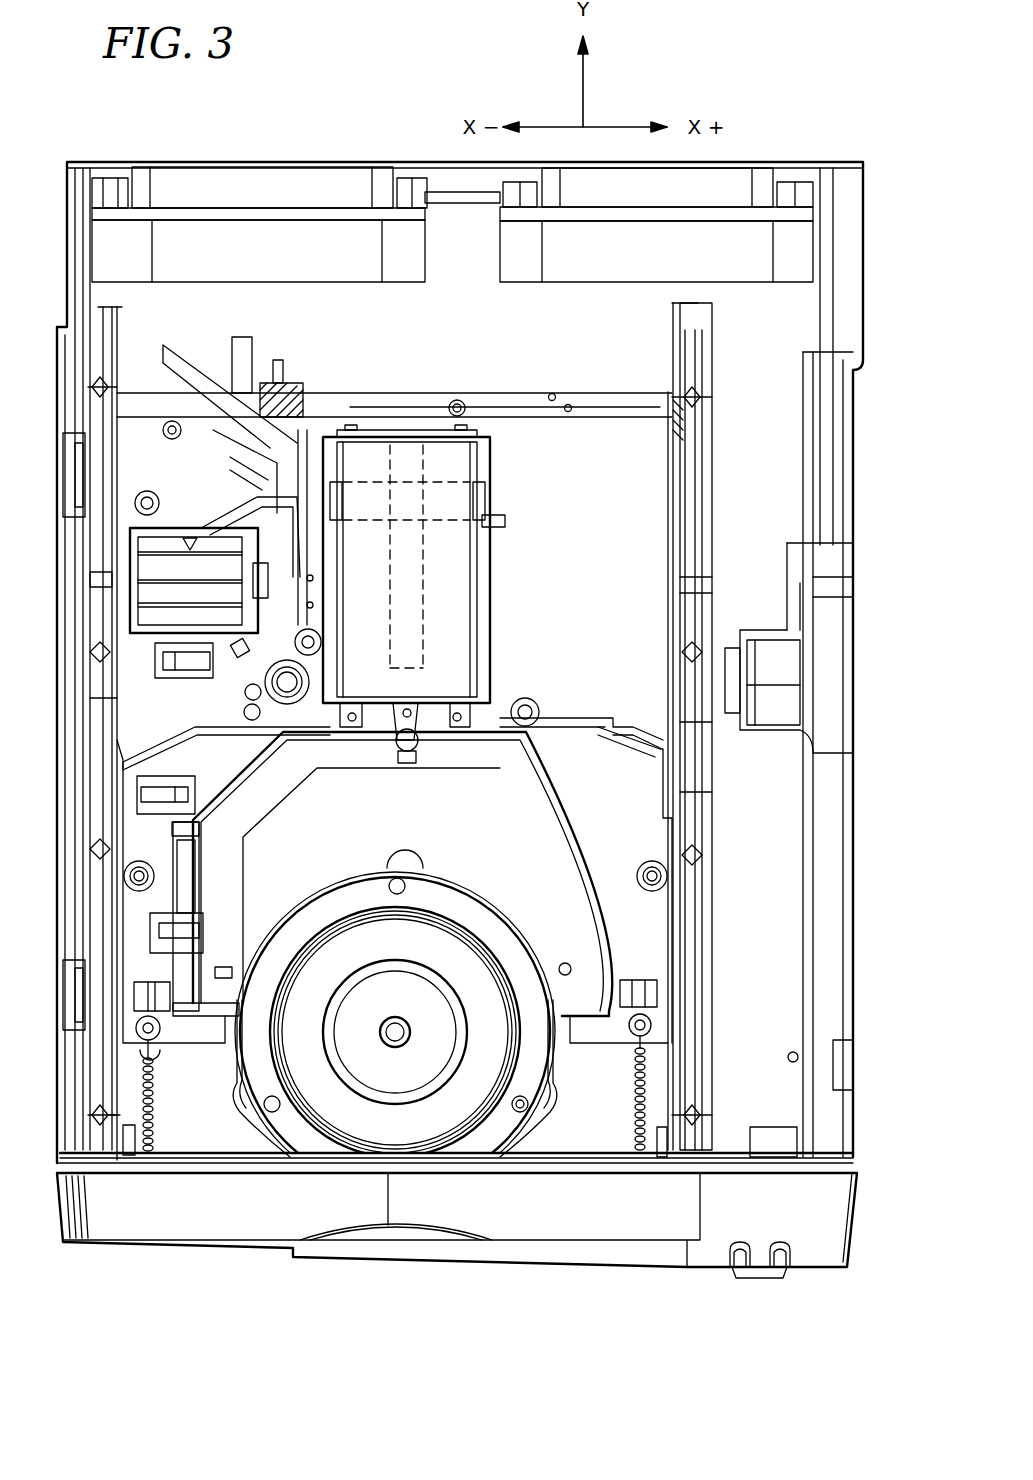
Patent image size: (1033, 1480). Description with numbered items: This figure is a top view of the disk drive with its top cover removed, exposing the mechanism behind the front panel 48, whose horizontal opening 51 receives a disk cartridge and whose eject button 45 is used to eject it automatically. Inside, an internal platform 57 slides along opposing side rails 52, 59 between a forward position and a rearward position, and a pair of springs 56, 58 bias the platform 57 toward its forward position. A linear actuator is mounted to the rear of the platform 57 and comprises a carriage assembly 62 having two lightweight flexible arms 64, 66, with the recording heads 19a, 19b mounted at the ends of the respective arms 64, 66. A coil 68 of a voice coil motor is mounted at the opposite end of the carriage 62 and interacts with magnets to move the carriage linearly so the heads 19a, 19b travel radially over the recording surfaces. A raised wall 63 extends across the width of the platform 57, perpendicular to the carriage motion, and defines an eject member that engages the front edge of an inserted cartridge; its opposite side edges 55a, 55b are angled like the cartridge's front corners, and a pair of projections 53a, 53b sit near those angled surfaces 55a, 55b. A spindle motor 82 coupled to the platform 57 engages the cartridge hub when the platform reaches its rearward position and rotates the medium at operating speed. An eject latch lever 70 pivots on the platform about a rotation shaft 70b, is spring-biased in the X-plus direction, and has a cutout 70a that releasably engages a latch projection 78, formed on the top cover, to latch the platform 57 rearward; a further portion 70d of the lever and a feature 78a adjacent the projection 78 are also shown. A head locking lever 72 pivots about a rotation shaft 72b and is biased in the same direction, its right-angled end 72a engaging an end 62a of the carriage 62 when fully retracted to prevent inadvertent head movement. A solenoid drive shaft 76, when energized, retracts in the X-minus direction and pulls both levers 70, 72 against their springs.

The recording head 19a is at (411, 764).
The recording head 19b is at (407, 746).
The eject button 45 is at (760, 1278).
The front panel 48 is at (233, 1202).
The horizontal opening 51 is at (362, 1232).
The side rail 52 is at (100, 612).
The projection 53a is at (224, 727).
The projection 53b is at (590, 727).
The side edge of eject member 55a is at (125, 735).
The side edge of eject member 55b is at (620, 740).
The spring 56 is at (150, 1137).
The internal platform 57 is at (402, 944).
The spring 58 is at (637, 1133).
The side rail 59 is at (692, 533).
The carriage assembly 62 is at (423, 562).
The end of actuator carriage 62a is at (413, 460).
The raised wall 63 is at (550, 715).
The flexible arm 64 is at (406, 557).
The flexible arm 66 is at (423, 677).
The coil 68 is at (463, 497).
The eject latch lever 70 is at (245, 474).
The cutout 70a is at (225, 512).
The rotation shaft 70b is at (252, 672).
The lever blade 70d is at (172, 348).
The head locking lever 72 is at (325, 410).
The end of head locking lever 72a is at (383, 418).
The rotation shaft 72b is at (318, 636).
The drive shaft 76 is at (303, 577).
The latch projection 78 is at (290, 385).
The post block 78a is at (258, 425).
The spindle motor 82 is at (395, 1032).